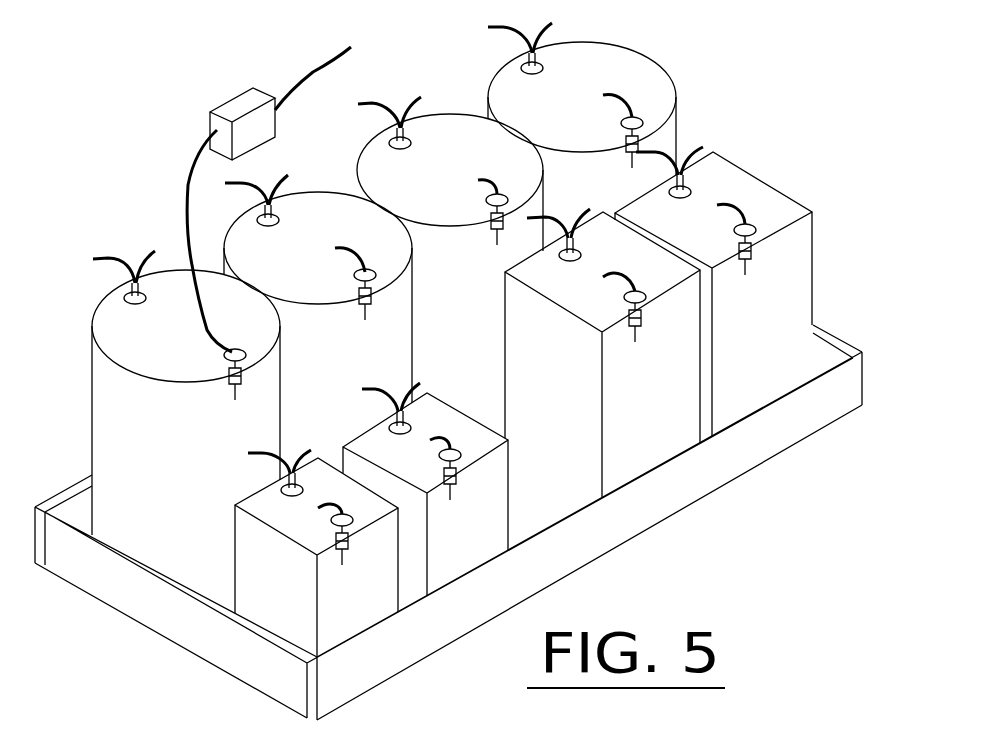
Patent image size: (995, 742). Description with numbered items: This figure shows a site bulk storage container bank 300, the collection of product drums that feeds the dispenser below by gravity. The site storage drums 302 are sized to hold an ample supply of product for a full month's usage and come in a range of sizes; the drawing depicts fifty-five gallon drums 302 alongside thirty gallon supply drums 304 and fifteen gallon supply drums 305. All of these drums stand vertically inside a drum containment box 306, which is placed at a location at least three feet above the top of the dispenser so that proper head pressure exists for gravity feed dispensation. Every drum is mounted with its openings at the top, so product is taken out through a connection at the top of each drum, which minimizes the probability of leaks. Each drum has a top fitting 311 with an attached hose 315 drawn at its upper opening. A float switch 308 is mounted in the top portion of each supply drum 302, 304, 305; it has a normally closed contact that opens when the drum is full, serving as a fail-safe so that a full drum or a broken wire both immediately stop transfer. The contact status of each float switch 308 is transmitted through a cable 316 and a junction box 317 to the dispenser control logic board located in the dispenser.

The site bulk storage container bank 300 is at (448, 360).
The site storage drum 302 is at (178, 536).
The supply drum 304 is at (633, 438).
The supply drum 305 is at (341, 636).
The drum containment box 306 is at (848, 408).
The float switch 308 is at (223, 388).
The inlet fitting 311 is at (150, 243).
The supply hose 315 is at (109, 268).
The cable 316 is at (302, 78).
The junction box 317 is at (243, 124).